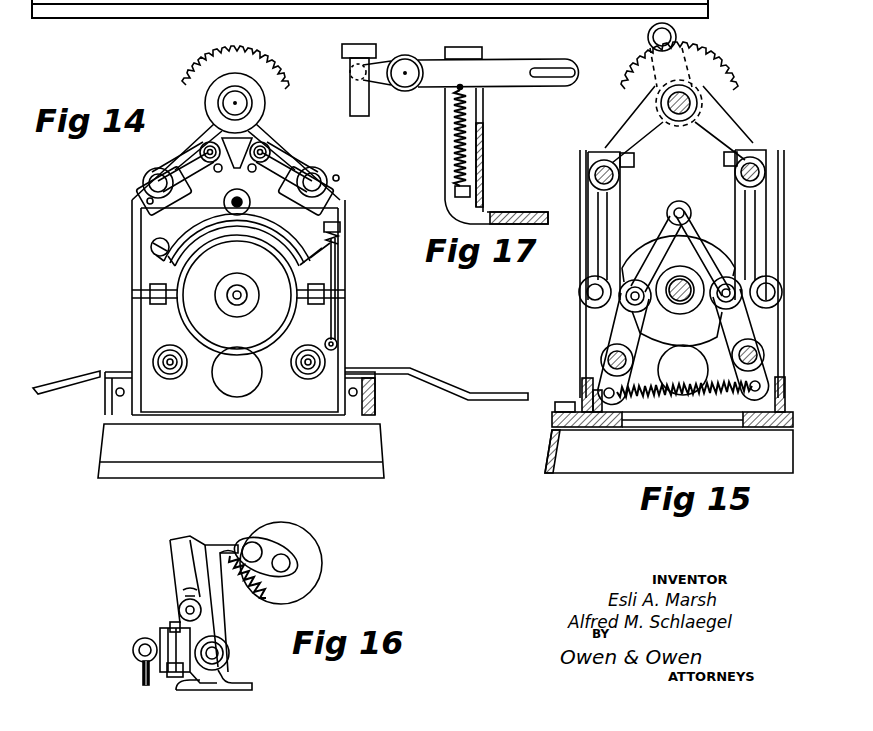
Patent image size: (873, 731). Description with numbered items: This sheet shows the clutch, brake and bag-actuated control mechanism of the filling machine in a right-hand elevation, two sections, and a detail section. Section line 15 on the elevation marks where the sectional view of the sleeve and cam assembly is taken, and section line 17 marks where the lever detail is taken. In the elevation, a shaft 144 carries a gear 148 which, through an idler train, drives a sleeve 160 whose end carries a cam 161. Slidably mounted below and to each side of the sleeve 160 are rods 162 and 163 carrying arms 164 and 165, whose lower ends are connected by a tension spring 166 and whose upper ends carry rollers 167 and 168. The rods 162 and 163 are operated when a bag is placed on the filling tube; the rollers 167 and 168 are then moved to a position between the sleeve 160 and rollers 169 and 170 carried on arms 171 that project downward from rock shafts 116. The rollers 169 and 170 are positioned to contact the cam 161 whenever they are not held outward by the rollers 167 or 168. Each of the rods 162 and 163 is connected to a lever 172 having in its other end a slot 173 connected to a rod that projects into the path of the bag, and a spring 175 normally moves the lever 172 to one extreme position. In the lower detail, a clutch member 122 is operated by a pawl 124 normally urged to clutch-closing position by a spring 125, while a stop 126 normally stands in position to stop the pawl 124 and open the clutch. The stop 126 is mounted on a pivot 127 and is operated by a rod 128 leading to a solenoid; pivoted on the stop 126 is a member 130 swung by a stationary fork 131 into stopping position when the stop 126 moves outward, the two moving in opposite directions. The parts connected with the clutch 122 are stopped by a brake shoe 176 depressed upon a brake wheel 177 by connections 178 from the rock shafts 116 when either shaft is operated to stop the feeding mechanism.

In FIG. 14, the section line 15— 15 is at (530, 0).
In FIG. 14, the section line 17— 17 is at (340, 332).
In FIG. 14, the rock shafts 116 is at (142, 194).
In FIG. 15, the rock shafts 116 is at (592, 178).
In FIG. 16, the clutch member 122 is at (320, 546).
In FIG. 16, the pawl 124 is at (232, 540).
In FIG. 16, the spring 125 is at (292, 617).
In FIG. 16, the stop 126 is at (217, 585).
In FIG. 16, the pivot 127 is at (229, 653).
In FIG. 16, the rod 128 is at (134, 650).
In FIG. 16, the member 130 is at (172, 558).
In FIG. 16, the stationary fork 131 is at (170, 594).
In FIG. 14, the shaft 144 is at (232, 102).
In FIG. 14, the gear 148 is at (285, 78).
In FIG. 15, the sleeve 160 is at (683, 277).
In FIG. 15, the cam 161 is at (667, 216).
In FIG. 17, the rod 162 is at (364, 108).
In FIG. 15, the rod 162 is at (608, 361).
In FIG. 15, the rod 163 is at (733, 359).
In FIG. 15, the arm 164 is at (617, 328).
In FIG. 15, the arm 165 is at (750, 338).
In FIG. 15, the tension spring 166 is at (712, 394).
In FIG. 15, the roller 167 is at (642, 280).
In FIG. 15, the roller 168 is at (717, 224).
In FIG. 15, the roller 169 is at (582, 296).
In FIG. 15, the roller 170 is at (766, 309).
In FIG. 15, the arms 171 is at (590, 242).
In FIG. 17, the lever 172 is at (431, 62).
In FIG. 17, the slot 173 is at (551, 73).
In FIG. 17, the spring 175 is at (460, 151).
In FIG. 14, the brake shoe 176 is at (264, 224).
In FIG. 14, the brake wheel 177 is at (291, 286).
In FIG. 14, the connections 178 is at (290, 157).